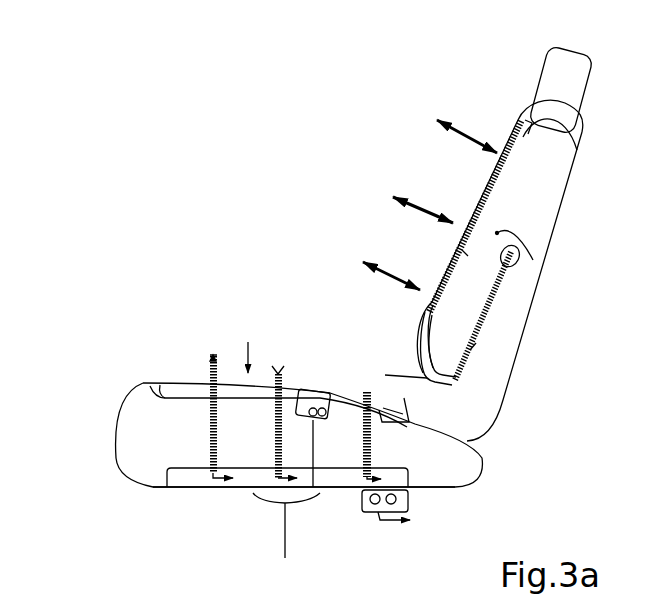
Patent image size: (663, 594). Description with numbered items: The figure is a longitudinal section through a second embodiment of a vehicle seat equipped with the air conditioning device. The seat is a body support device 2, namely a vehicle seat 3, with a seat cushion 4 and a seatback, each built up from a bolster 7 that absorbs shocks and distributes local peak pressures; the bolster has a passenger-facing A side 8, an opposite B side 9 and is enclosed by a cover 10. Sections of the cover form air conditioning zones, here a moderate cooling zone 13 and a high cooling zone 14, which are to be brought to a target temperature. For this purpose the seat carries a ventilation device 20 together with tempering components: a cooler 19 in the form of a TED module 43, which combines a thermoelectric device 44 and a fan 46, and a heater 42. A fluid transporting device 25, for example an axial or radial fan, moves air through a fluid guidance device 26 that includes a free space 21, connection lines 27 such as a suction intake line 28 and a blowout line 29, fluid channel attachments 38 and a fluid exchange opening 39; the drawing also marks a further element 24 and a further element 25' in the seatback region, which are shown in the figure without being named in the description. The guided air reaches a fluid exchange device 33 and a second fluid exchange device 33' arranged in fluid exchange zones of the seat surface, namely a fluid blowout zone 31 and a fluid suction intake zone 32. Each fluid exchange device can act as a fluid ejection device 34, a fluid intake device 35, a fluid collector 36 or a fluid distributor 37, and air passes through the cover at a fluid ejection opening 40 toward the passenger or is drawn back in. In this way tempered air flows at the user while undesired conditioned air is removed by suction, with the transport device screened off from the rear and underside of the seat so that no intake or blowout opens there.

The body support device 2 is at (524, 290).
The vehicle seat 3 is at (498, 413).
The seat cushion 4 is at (288, 495).
The bolster 7 is at (121, 462).
The A side 8 is at (516, 113).
The B side 9 is at (574, 152).
The cover 10 is at (345, 278).
The moderate cooling zone 13 is at (333, 285).
The high cooling zone 14 is at (422, 247).
The cooler 19 is at (316, 400).
The ventilation device 20 is at (560, 89).
The free space 21 is at (493, 183).
The pivot direction 24 is at (438, 119).
The fluid transporting device 25 is at (366, 491).
The pivot bearing 25' is at (537, 283).
The fluid guidance device 26 is at (432, 303).
The connection line 27 is at (518, 260).
The suction intake line 28 is at (537, 318).
The blowout line 29 is at (470, 350).
The fluid blowout zone 31 is at (301, 452).
The fluid suction intake zone 32 is at (418, 426).
The fluid exchange device 33 is at (264, 530).
The second fluid exchange device 33' is at (137, 319).
The fluid ejection device 34 is at (167, 383).
The fluid intake device 35 is at (184, 490).
The fluid collector 36 is at (513, 162).
The fluid distributor 37 is at (364, 334).
The fluid channel attachment 38 is at (465, 253).
The fluid exchange opening 39 is at (422, 333).
The fluid ejection opening 40 is at (364, 334).
The heater 42 is at (314, 407).
The TED module 43 is at (286, 543).
The thermoelectric device 44 is at (280, 372).
The fan 46 is at (367, 507).